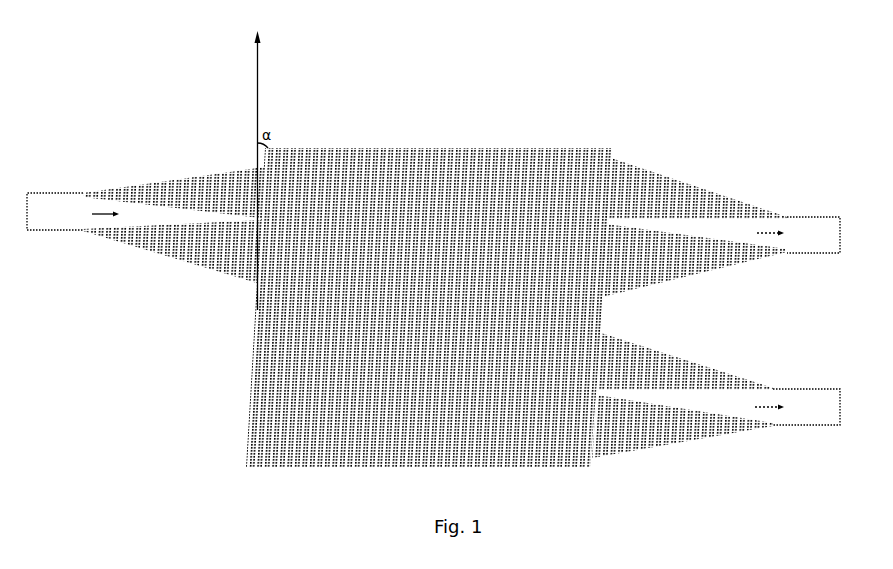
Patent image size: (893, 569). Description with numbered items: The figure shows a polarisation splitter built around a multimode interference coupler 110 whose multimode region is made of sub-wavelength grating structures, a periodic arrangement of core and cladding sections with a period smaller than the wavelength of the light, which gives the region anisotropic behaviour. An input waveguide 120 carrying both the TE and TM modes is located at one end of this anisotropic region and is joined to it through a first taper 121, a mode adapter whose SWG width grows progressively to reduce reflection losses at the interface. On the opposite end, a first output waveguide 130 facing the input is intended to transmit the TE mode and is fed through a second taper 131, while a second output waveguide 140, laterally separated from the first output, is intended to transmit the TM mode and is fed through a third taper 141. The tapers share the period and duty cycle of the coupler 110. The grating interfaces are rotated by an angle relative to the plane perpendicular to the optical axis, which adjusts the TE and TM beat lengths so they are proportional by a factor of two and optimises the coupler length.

The multimode interference coupler 110 is at (452, 148).
The input waveguide 120 is at (73, 192).
The first taper 121 is at (218, 172).
The first output waveguide 130 is at (810, 218).
The second taper 131 is at (733, 197).
The second output waveguide 140 is at (805, 390).
The third taper 141 is at (730, 372).